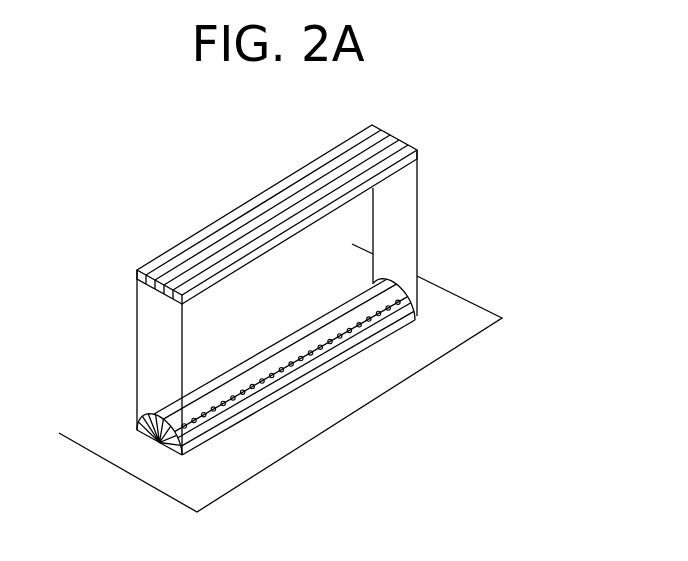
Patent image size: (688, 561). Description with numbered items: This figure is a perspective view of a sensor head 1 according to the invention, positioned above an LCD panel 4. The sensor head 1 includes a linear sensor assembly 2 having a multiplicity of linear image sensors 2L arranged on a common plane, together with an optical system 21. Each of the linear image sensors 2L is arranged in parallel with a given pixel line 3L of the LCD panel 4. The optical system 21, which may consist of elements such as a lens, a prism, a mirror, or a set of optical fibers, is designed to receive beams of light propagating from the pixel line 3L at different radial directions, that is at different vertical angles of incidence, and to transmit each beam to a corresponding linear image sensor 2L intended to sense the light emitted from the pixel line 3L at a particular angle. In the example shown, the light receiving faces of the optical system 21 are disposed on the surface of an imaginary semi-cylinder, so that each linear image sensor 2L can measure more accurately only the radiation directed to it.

The sensor head 1 is at (283, 297).
The linear sensor assembly 2 is at (277, 199).
The linear image sensors 2L is at (190, 241).
The optical system 21 is at (152, 318).
The pixel line 3L is at (265, 385).
The LCD panel 4 is at (97, 432).